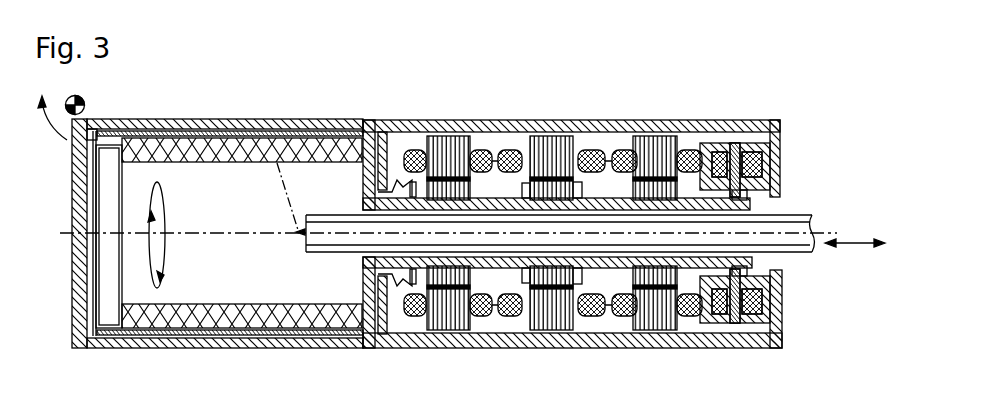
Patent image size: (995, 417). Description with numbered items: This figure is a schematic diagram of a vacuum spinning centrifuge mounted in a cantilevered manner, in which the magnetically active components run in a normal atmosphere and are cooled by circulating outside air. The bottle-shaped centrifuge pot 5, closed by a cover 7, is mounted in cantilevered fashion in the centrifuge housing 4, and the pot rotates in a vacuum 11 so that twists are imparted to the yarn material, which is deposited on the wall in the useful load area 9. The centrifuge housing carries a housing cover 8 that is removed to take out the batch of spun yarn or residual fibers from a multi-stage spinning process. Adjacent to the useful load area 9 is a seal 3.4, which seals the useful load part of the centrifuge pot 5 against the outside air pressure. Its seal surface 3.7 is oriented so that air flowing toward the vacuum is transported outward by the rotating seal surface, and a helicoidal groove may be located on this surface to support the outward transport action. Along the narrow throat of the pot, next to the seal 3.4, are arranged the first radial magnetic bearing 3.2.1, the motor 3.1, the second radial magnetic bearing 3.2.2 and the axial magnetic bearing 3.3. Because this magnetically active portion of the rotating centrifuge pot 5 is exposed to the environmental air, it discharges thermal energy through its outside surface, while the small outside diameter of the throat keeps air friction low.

The motor 3.1 is at (558, 132).
The first radial magnetic bearing 3.2.1 is at (448, 133).
The second radial magnetic bearing 3.2.2 is at (658, 132).
The axial magnetic bearing 3.3 is at (757, 150).
The seal 3.4 is at (388, 190).
The seal surface 3.7 is at (410, 283).
The centrifuge housing 4 is at (172, 348).
The centrifuge pot 5 is at (252, 337).
The cover 7 is at (100, 307).
The housing cover 8 is at (72, 192).
The useful load area 9 is at (357, 104).
The vacuum 11 is at (93, 247).